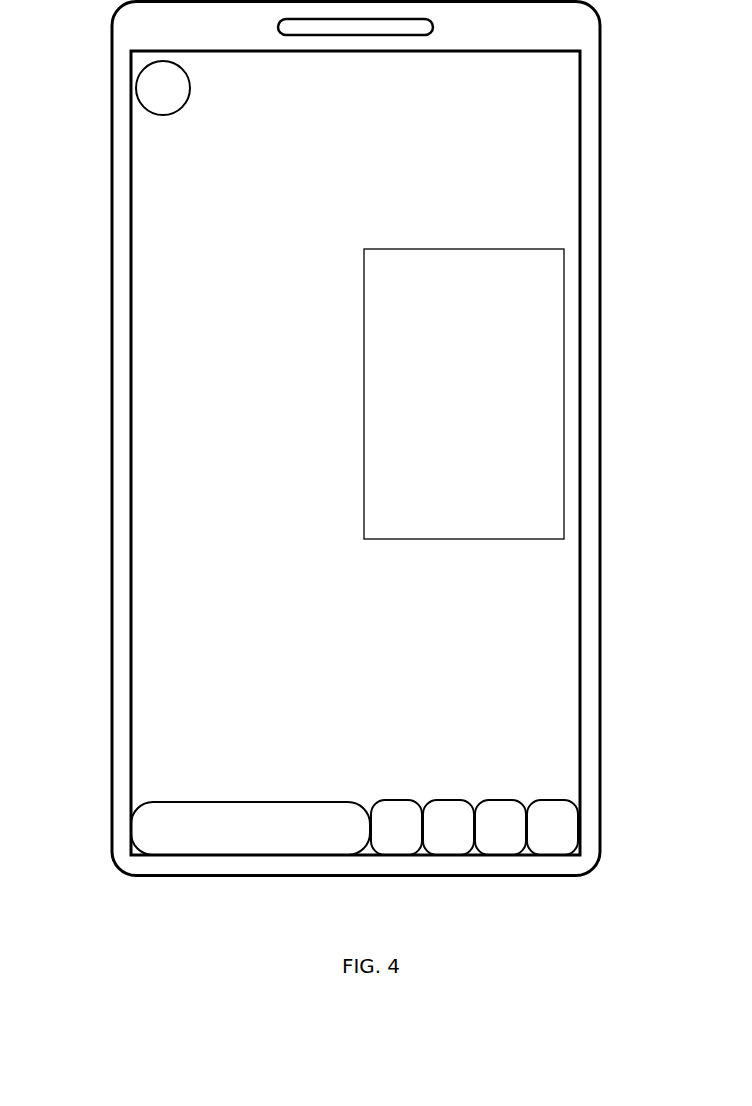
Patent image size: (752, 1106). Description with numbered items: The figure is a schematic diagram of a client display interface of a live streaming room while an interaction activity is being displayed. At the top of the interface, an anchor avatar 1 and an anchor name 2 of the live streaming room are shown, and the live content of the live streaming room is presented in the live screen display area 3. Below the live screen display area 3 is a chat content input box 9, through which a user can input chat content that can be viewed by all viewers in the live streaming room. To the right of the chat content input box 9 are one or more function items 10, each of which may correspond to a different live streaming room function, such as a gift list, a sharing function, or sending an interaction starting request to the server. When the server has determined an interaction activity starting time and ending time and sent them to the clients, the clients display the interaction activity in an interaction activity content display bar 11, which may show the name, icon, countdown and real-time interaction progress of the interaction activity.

The anchor avatar 1 is at (138, 90).
The anchor name 2 is at (271, 91).
The live screen display area 3 is at (503, 190).
The chat content input box 9 is at (250, 828).
The function item 10 is at (563, 818).
The interaction activity content display bar 11 is at (464, 394).